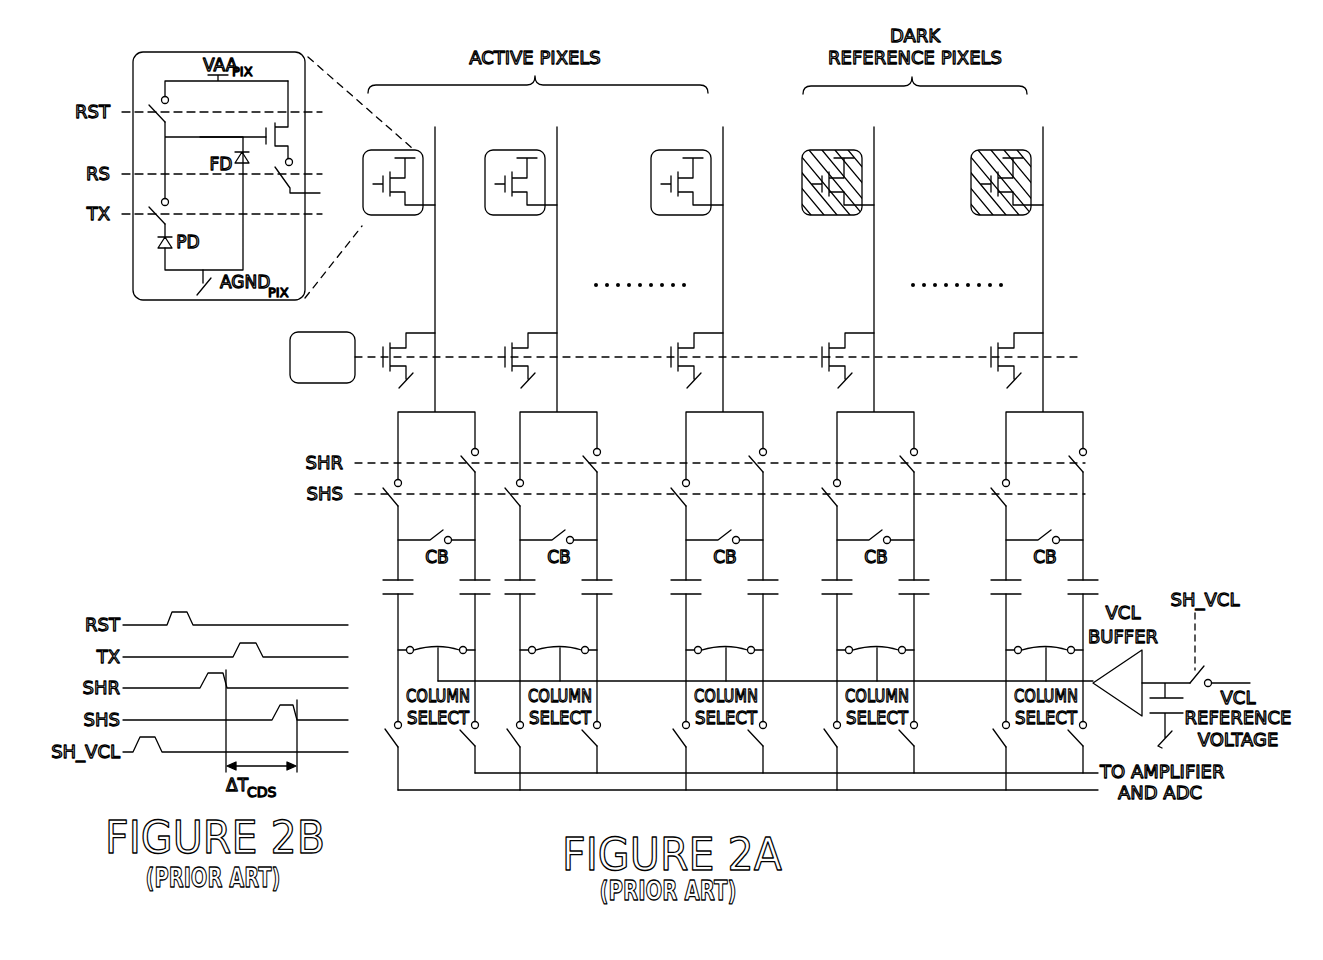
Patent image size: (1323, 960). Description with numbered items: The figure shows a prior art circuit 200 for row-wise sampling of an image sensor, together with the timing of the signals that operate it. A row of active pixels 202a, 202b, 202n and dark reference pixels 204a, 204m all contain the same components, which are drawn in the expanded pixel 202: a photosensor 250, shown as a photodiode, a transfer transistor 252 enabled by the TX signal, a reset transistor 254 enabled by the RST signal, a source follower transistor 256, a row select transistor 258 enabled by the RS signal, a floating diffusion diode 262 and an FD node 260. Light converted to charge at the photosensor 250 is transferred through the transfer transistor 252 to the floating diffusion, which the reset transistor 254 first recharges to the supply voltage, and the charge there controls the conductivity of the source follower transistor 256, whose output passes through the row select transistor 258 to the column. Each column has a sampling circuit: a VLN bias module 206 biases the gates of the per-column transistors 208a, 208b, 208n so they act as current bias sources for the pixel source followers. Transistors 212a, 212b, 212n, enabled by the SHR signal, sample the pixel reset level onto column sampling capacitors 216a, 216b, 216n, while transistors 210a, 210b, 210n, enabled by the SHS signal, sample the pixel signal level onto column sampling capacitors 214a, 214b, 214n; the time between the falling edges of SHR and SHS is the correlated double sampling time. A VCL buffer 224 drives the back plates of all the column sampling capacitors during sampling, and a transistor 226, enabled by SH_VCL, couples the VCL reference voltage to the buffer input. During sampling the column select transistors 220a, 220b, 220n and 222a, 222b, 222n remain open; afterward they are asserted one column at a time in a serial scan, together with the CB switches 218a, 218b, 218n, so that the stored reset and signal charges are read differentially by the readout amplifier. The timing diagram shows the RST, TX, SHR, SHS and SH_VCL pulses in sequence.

The prior art circuit 200 is at (1106, 93).
The pixel 202 is at (255, 52).
The active pixel 202a is at (399, 206).
The active pixel 202b is at (521, 206).
The active pixel 202n is at (687, 206).
The dark reference pixel 204a is at (823, 206).
The dark reference pixel 204m is at (992, 206).
The VLN bias module 206 is at (290, 378).
The per-column transistor 208a is at (401, 345).
The per-column transistor 208b is at (522, 345).
The per-column transistor 208n is at (688, 345).
The transistor 210a is at (379, 514).
The transistor 210b is at (500, 514).
The transistor 210n is at (666, 514).
The transistor 212a is at (447, 447).
The transistor 212b is at (568, 447).
The transistor 212n is at (734, 447).
The column sampling capacitor 214a is at (423, 611).
The column sampling capacitor 214b is at (544, 611).
The column sampling capacitor 214n is at (710, 611).
The column sampling capacitor 216a is at (436, 639).
The column sampling capacitor 216b is at (558, 639).
The column sampling capacitor 216n is at (724, 639).
The CB switch 218a is at (436, 521).
The CB switch 218b is at (558, 521).
The CB switch 218n is at (724, 521).
The column select transistor 220a is at (379, 717).
The column select transistor 220b is at (500, 717).
The column select transistor 220n is at (666, 717).
The column select transistor 222a is at (441, 742).
The column select transistor 222b is at (562, 742).
The column select transistor 222n is at (728, 742).
The VCL buffer 224 is at (1125, 713).
The transistor 226 is at (1202, 665).
The photosensor 250 is at (171, 246).
The transfer transistor 252 is at (172, 210).
The reset transistor 254 is at (172, 109).
The source follower transistor 256 is at (267, 127).
The row select transistor 258 is at (278, 168).
The FD node 260 is at (213, 157).
The floating diffusion (FD) diode 262 is at (238, 137).